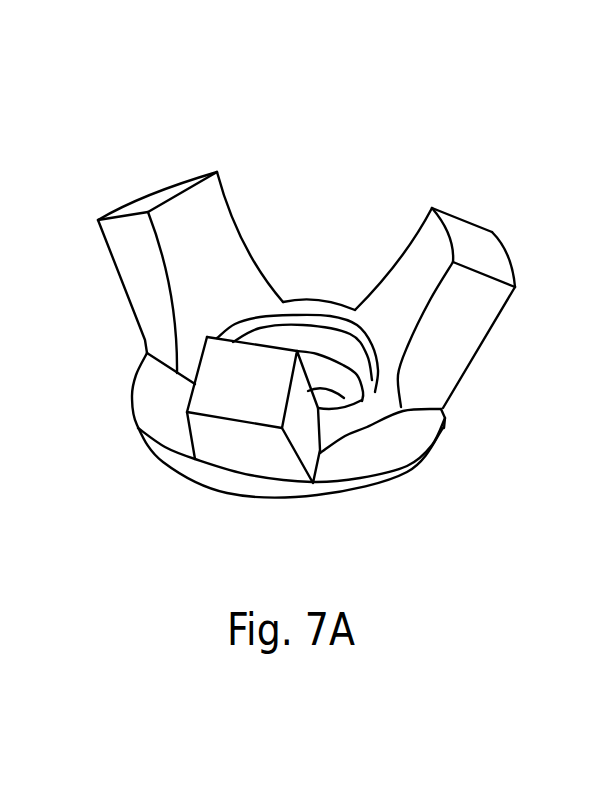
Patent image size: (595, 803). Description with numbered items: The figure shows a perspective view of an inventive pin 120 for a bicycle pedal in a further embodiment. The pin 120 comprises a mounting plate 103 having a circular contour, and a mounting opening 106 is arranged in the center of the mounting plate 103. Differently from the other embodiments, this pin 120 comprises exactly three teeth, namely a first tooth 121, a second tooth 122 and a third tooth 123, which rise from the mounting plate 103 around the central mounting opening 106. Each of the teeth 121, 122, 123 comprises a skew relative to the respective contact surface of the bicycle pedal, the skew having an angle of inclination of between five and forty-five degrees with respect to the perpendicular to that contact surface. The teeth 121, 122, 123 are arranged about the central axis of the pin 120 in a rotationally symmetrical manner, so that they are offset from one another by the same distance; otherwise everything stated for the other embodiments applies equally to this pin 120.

The pin 120 is at (375, 113).
The first tooth 121 is at (152, 197).
The second tooth 122 is at (475, 245).
The third tooth 123 is at (235, 392).
The mounting plate 103 is at (377, 443).
The mounting opening 106 is at (310, 348).